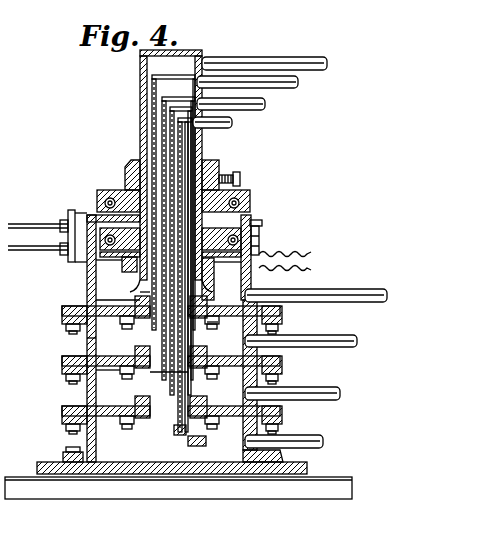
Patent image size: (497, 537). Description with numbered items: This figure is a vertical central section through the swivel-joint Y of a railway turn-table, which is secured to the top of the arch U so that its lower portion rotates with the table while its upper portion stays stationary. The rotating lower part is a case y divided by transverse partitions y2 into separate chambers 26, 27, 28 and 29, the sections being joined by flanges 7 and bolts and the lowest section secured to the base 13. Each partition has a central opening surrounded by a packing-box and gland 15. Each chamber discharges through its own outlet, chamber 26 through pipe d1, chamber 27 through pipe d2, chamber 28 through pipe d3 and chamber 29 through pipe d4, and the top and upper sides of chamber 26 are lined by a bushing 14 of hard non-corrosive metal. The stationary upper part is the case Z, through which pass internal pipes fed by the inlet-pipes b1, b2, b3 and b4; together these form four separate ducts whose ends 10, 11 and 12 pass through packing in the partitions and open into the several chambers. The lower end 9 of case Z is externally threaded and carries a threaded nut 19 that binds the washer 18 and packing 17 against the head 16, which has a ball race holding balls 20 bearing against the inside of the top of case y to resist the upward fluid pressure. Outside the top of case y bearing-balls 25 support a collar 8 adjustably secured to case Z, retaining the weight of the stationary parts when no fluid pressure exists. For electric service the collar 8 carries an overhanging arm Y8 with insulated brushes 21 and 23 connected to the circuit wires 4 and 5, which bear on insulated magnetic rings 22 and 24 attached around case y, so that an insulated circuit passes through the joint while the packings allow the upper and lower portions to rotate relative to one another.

The case Z is at (140, 88).
The collar 8 is at (126, 170).
The bearing-balls 25 is at (234, 197).
The overhanging arm Y8 is at (97, 203).
The case y is at (260, 222).
The washer 18 is at (121, 272).
The bushing 14 is at (118, 281).
The lower end of the case 9 is at (142, 292).
The threaded nut 19 is at (212, 279).
The packing 17 is at (226, 278).
The head 16 is at (261, 250).
The balls 20 is at (263, 229).
The chamber 26 is at (262, 272).
The electric-circuit wire 4 is at (316, 249).
The electric-circuit wire 5 is at (316, 269).
The insulated magnetic ring 22 is at (68, 222).
The insulated brush 21 is at (61, 244).
The insulated brush 23 is at (68, 259).
The insulated magnetic ring 24 is at (84, 266).
The end of internal pipe 10 is at (160, 337).
The swivel-joint Y is at (85, 338).
The chamber 27 is at (172, 362).
The flange 7 is at (62, 360).
The transverse partition y2 is at (116, 367).
The end of internal pipe 11 is at (170, 384).
The chamber 28 is at (172, 402).
The packing-box and gland 15 is at (219, 323).
The end of internal pipe 12 is at (176, 431).
The chamber 29 is at (201, 448).
The base 13 is at (304, 470).
The arch U is at (205, 500).
The inlet-pipe b1 is at (328, 62).
The inlet-pipe b2 is at (299, 84).
The inlet-pipe b3 is at (267, 104).
The inlet-pipe b4 is at (234, 124).
The pipe d1 is at (388, 300).
The pipe d2 is at (358, 341).
The pipe d3 is at (342, 393).
The pipe d4 is at (326, 441).